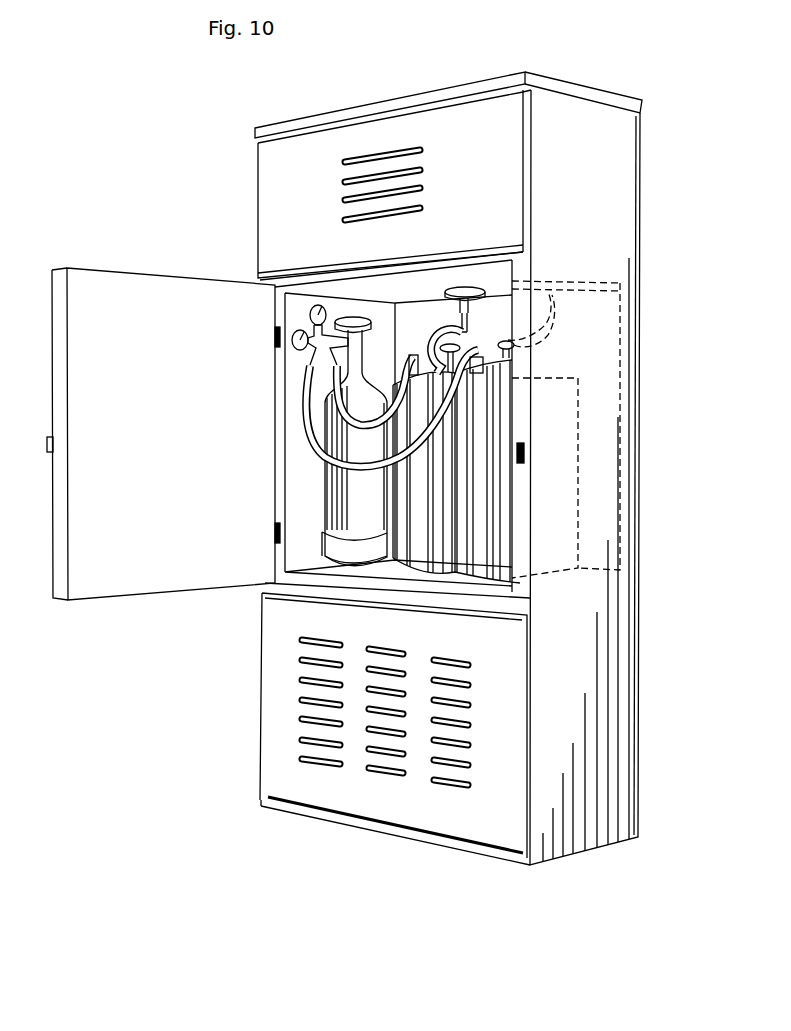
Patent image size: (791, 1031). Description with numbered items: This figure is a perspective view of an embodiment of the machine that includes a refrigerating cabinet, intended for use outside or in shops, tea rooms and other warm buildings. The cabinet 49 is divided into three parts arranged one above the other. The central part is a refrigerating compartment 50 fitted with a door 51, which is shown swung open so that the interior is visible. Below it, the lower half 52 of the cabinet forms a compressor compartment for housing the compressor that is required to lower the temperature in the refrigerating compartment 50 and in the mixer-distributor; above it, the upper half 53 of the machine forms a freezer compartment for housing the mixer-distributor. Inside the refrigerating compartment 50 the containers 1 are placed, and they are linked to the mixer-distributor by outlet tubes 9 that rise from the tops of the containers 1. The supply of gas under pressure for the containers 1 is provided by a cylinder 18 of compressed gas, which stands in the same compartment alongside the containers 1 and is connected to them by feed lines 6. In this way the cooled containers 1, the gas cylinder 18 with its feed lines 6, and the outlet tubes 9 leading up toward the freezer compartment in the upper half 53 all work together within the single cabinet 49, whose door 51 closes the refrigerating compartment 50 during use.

The containers 1 is at (507, 543).
The feed lines 6 is at (302, 400).
The outlet tubes 9 is at (438, 327).
The cylinder of compressed gas 18 is at (347, 494).
The cabinet housing 49 is at (600, 828).
The refrigerating compartment 50 is at (600, 393).
The door 51 is at (183, 578).
The lower half of the cabinet 52 is at (285, 773).
The upper half of the machine 53 is at (272, 190).